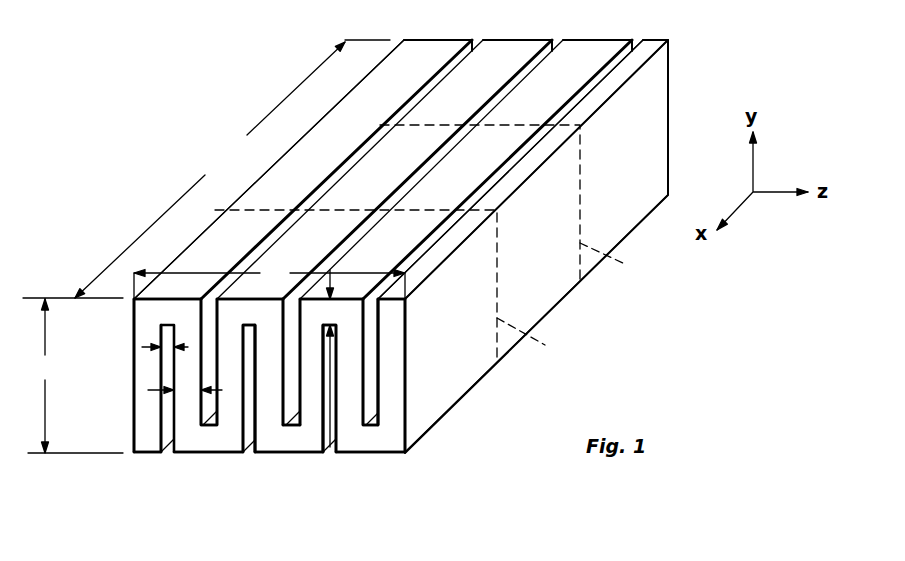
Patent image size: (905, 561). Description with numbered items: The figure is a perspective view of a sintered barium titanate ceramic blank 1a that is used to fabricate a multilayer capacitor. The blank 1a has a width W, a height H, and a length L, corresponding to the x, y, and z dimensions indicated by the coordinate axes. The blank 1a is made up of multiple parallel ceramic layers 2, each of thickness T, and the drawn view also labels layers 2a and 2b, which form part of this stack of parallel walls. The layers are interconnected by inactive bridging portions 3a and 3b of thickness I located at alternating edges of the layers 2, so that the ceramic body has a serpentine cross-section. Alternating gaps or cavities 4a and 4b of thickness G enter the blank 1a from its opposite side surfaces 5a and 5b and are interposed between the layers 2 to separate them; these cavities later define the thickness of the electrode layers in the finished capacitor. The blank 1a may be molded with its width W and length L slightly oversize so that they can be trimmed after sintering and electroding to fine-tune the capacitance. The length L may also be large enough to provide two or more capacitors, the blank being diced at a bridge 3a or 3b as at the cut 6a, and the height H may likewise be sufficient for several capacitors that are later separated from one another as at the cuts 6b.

The sintered barium titanate blank 1a is at (695, 78).
The ceramic layers 2 is at (310, 433).
The fin wall 2a is at (415, 388).
The outer side wall 2b is at (137, 370).
The inactive bridging portion 3a is at (137, 312).
The inactive bridging portion 3b is at (228, 442).
The gap or cavity 4a is at (207, 420).
The gap or cavity 4b is at (252, 428).
The side surface 5a is at (395, 247).
The side surface 5b is at (390, 453).
The cut 6a is at (293, 423).
The cuts 6b is at (579, 301).
The height H is at (73, 375).
The width W is at (232, 169).
The length L is at (269, 283).
The thickness of gaps or cavities G is at (137, 340).
The thickness of ceramic layers T is at (190, 390).
The thickness of bridging portions I is at (348, 328).